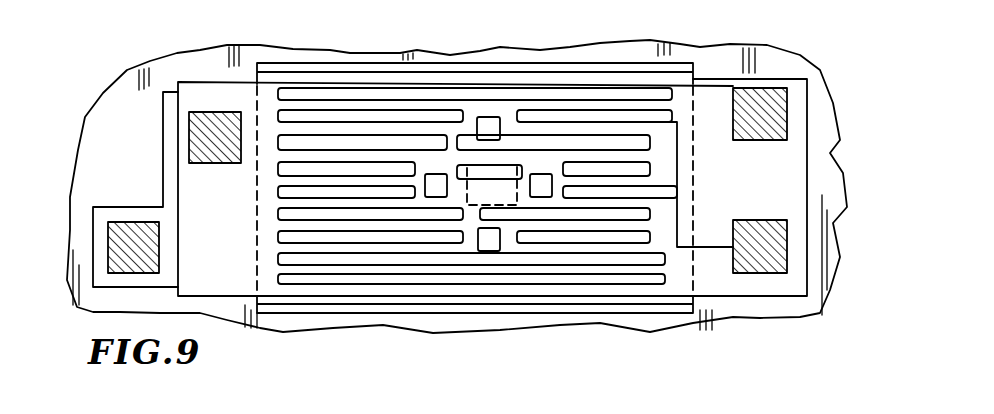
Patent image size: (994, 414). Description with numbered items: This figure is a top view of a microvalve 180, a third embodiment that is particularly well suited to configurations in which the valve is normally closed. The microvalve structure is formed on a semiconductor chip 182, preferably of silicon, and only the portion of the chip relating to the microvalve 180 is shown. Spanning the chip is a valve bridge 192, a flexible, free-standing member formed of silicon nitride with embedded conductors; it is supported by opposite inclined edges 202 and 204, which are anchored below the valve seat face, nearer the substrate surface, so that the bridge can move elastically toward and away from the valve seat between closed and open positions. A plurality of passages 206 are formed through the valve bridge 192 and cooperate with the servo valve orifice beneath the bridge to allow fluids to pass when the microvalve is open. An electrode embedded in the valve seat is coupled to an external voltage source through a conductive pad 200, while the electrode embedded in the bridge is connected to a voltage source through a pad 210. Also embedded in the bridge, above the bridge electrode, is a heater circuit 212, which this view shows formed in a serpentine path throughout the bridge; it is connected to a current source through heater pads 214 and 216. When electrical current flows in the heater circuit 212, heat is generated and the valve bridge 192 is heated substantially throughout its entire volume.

The microvalve 180 is at (760, 35).
The semiconductor chip 182 is at (823, 156).
The valve bridge 192 is at (203, 92).
The conductive pad 200 is at (128, 222).
The inclined edge 202 is at (257, 231).
The inclined edge 204 is at (693, 205).
The passages 206 is at (481, 252).
The pad 210 is at (197, 127).
The heater circuit 212 is at (350, 287).
The heater pad 214 is at (763, 270).
The heater pad 216 is at (780, 108).